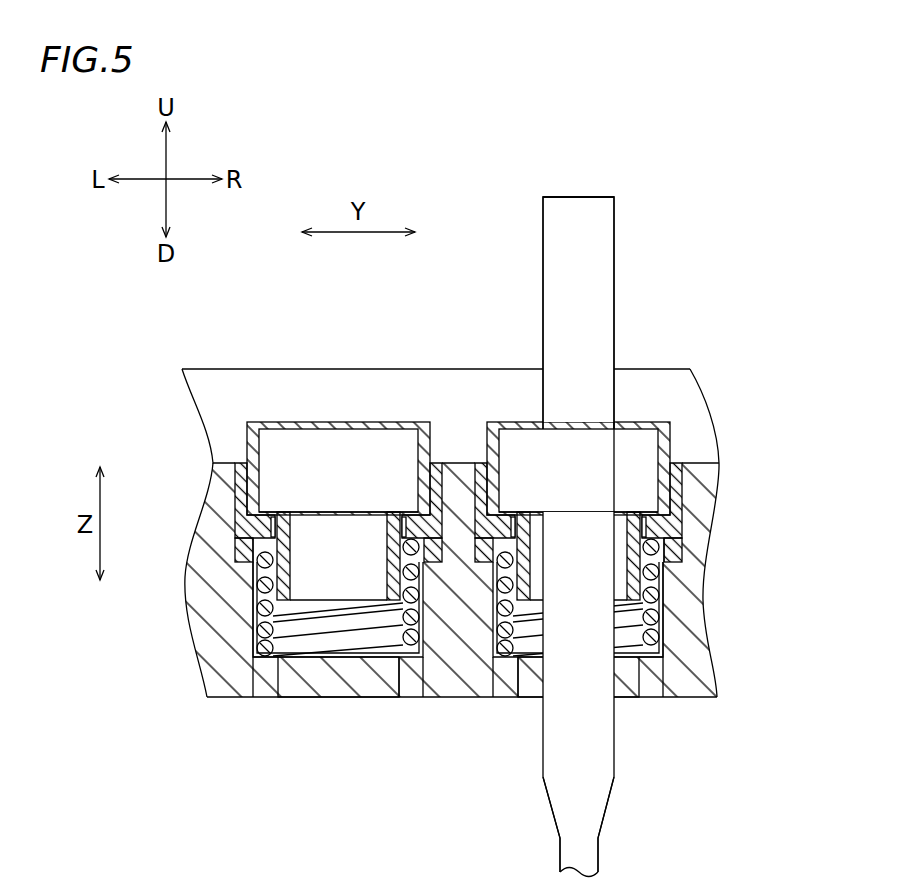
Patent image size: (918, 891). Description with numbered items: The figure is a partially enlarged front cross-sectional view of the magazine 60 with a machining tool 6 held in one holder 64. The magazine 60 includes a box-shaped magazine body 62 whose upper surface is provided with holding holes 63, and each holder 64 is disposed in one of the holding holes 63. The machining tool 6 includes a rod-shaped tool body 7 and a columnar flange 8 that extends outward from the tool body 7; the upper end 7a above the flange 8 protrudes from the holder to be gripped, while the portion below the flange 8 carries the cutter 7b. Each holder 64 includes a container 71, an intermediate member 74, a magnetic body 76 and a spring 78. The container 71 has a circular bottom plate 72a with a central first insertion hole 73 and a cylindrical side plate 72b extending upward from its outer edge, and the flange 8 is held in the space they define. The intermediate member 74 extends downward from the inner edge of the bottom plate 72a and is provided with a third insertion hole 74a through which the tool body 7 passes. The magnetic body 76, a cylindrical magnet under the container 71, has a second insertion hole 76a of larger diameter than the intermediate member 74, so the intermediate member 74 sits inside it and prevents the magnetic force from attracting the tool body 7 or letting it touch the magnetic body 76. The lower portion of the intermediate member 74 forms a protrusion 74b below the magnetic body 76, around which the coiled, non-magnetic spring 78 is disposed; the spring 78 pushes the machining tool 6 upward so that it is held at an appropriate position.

The machining tool 6 is at (616, 170).
The tool body 7 is at (614, 242).
The upper end 7a is at (528, 240).
The cutter 7b is at (625, 808).
The flange 8 is at (645, 420).
The magazine 60 is at (292, 345).
The magazine body 62 is at (693, 465).
The holding hole 63 is at (460, 640).
The holder 64 is at (458, 525).
The container 71 is at (340, 412).
The bottom plate 72a is at (408, 507).
The side plate 72b is at (232, 480).
The first insertion hole 73 is at (305, 510).
The intermediate member 74 is at (296, 560).
The third insertion hole 74a is at (385, 575).
The protrusion 74b is at (252, 598).
The magnetic body 76 is at (236, 556).
The second insertion hole 76a is at (238, 565).
The spring 78 is at (323, 657).